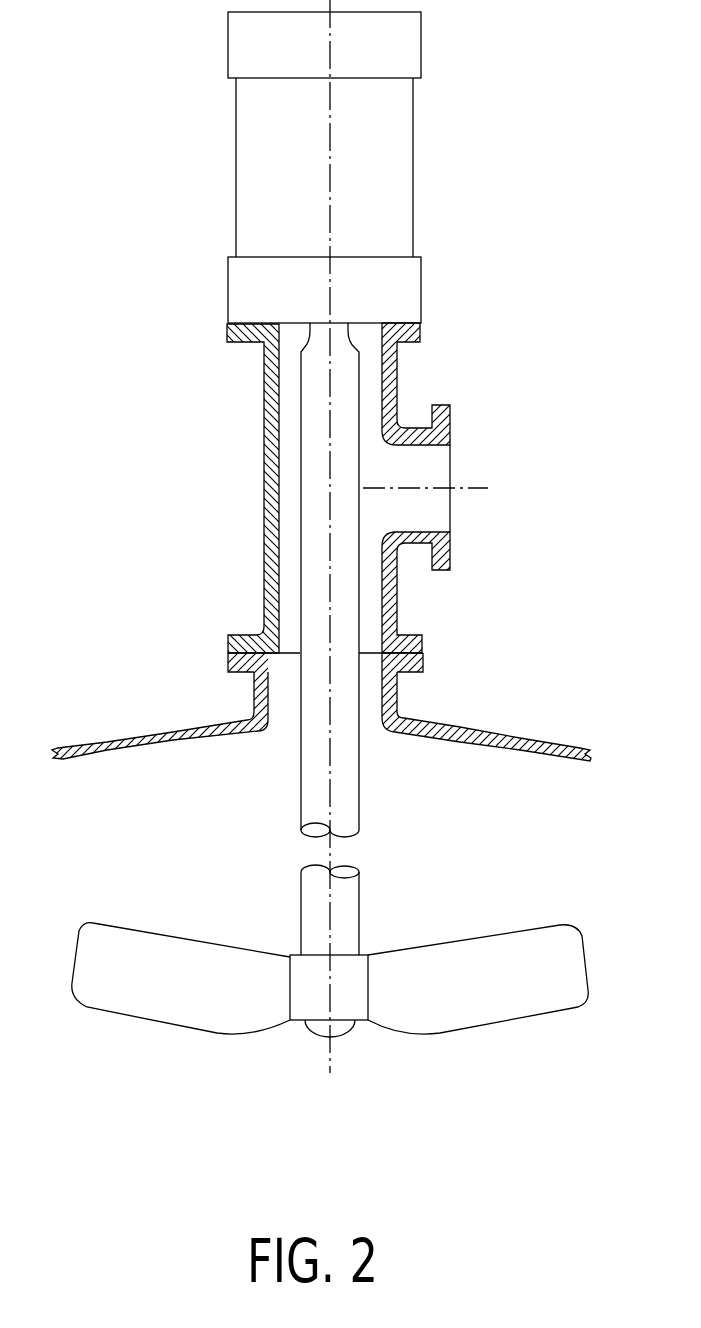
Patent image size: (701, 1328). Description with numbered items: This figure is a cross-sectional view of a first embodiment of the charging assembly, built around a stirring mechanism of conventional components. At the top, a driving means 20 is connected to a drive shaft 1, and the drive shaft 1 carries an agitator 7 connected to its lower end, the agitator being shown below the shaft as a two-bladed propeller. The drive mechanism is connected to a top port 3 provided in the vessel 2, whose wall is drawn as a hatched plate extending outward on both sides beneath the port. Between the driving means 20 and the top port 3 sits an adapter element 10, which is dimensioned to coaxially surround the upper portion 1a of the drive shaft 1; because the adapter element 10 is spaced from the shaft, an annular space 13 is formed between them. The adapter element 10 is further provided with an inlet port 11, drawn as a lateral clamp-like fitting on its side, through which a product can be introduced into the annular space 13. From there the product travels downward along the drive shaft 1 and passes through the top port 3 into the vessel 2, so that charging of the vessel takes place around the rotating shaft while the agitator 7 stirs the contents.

The driving means 20 is at (500, 117).
The adapter element 10 is at (140, 504).
The annular space 13 is at (290, 565).
The inlet port 11 is at (420, 472).
The top port 3 is at (430, 686).
The vessel 2 is at (547, 737).
The drive shaft 1 is at (298, 639).
The upper portion of the drive shaft 1a is at (317, 391).
The agitator 7 is at (493, 987).